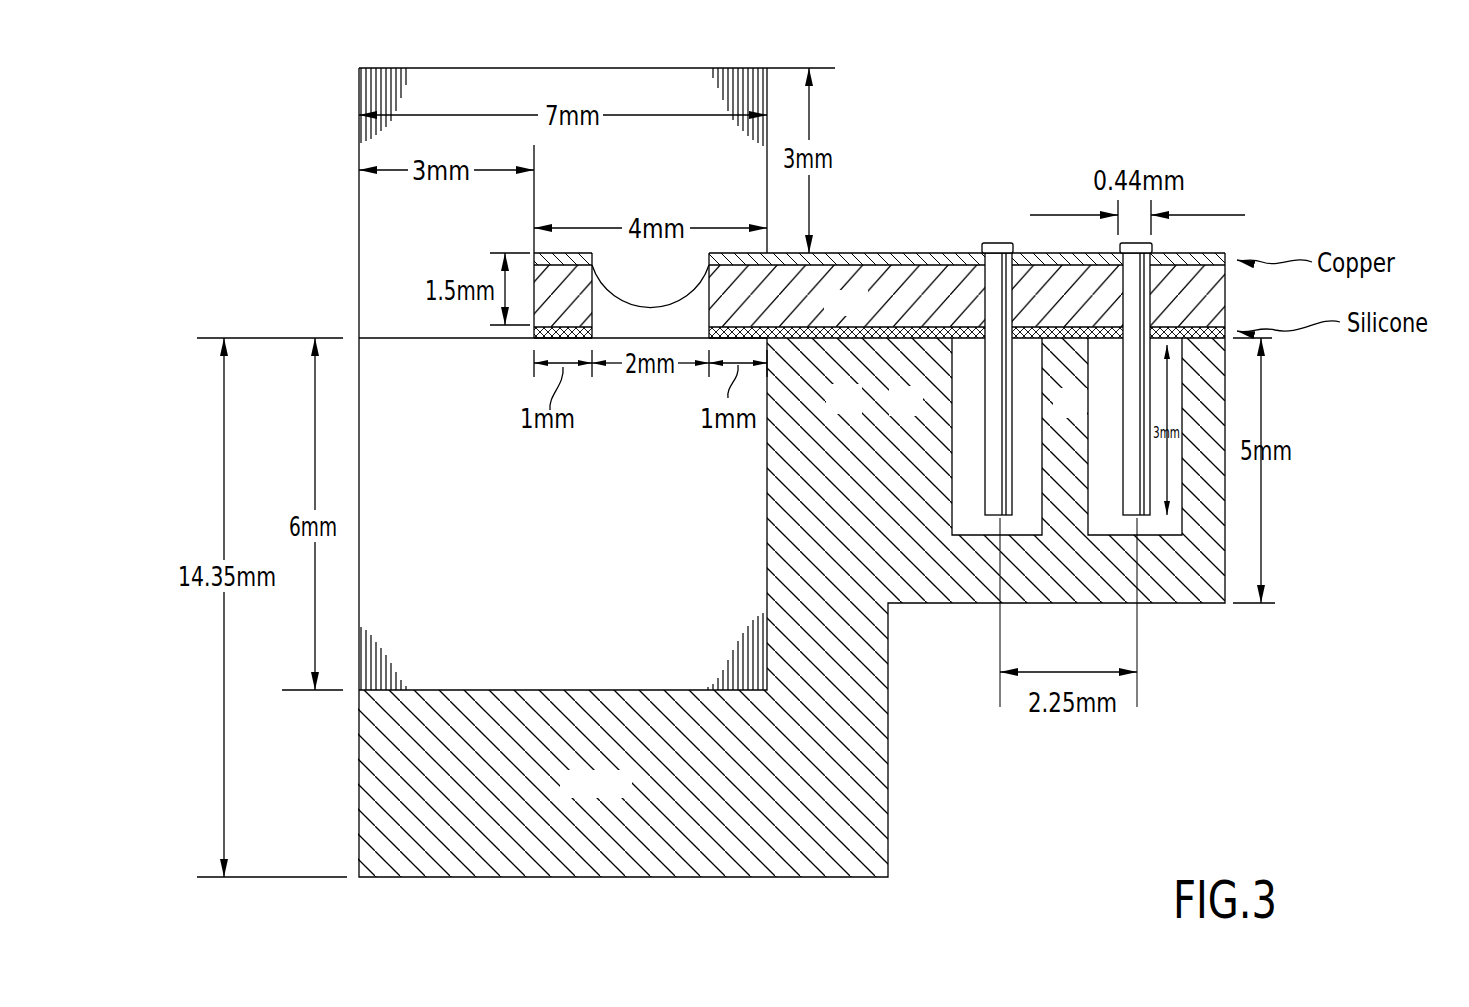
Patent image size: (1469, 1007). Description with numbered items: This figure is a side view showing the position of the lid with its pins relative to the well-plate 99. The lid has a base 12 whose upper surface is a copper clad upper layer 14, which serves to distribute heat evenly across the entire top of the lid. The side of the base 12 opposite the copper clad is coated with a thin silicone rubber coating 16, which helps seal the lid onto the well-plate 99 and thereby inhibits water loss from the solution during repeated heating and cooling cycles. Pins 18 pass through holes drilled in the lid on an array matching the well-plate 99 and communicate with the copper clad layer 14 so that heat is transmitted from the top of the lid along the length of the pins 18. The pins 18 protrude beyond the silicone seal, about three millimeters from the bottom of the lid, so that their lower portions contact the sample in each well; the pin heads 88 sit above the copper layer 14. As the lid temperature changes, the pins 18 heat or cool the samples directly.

The base 12 is at (905, 286).
The copper clad upper layer 14 is at (888, 253).
The silicone rubber coating 16 is at (843, 345).
The pins 18 is at (985, 398).
The pin head 88 is at (996, 243).
The well-plate 99 is at (888, 808).